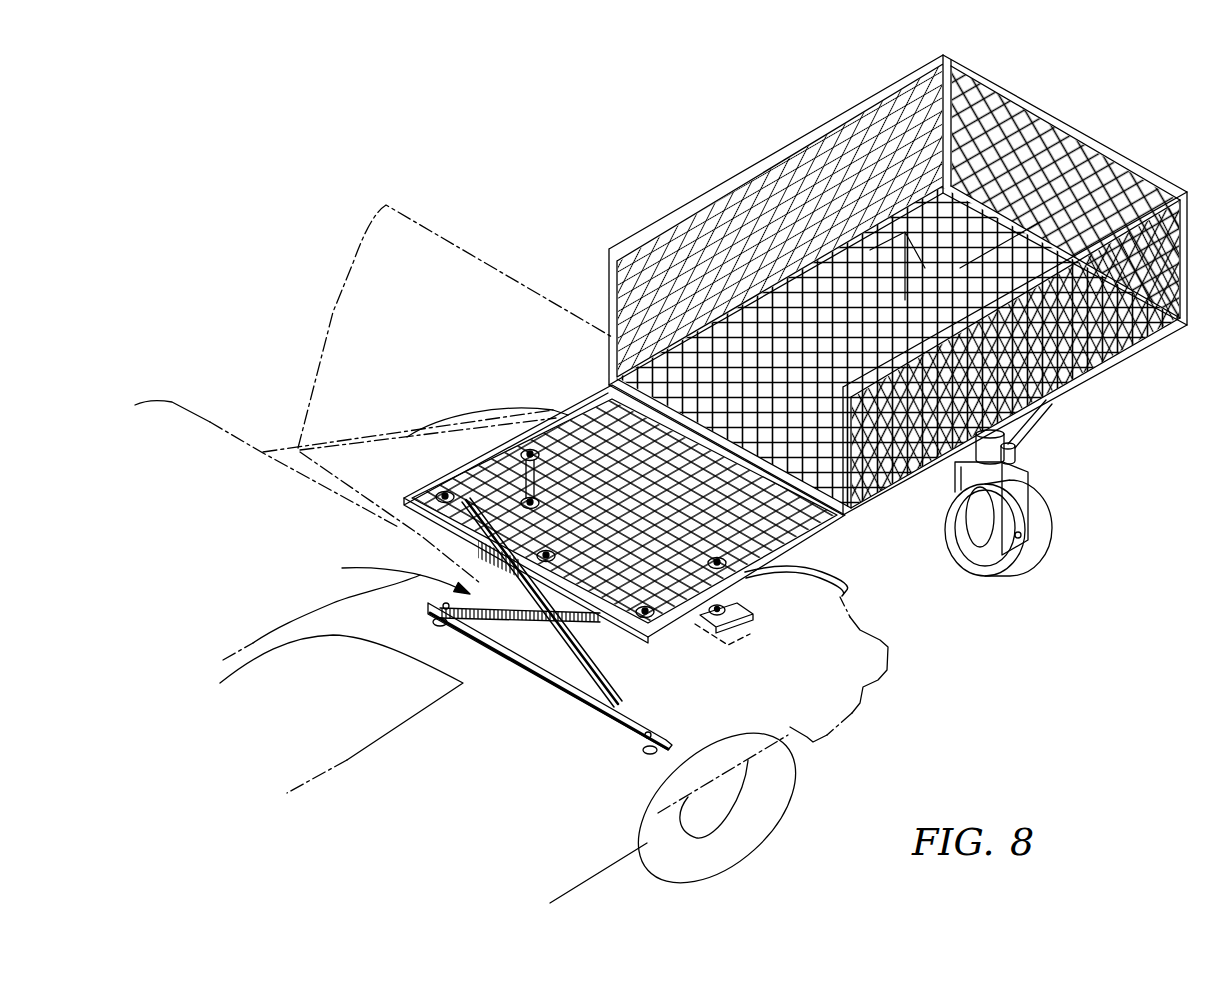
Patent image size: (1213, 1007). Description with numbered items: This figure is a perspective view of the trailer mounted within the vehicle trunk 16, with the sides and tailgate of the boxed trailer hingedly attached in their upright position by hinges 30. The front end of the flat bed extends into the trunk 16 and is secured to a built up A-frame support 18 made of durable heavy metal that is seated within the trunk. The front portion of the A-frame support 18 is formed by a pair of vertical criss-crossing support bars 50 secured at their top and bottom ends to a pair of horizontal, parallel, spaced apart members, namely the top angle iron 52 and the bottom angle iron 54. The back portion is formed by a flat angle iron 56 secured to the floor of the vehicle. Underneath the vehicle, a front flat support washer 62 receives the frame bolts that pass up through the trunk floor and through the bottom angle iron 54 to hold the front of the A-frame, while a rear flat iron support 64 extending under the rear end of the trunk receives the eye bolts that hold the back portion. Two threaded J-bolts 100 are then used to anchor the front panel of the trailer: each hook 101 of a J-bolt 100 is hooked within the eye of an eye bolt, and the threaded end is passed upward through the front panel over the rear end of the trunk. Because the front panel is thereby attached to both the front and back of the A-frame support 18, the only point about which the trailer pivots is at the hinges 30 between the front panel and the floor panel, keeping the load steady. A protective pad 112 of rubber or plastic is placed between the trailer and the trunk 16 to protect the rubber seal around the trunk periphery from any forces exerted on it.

The trunk 16 is at (355, 326).
The A-frame support 18 is at (386, 570).
The hinges 30 is at (890, 152).
The vertical criss-crossing support bars 50 is at (598, 681).
The top angle iron 52 is at (400, 532).
The bottom angle iron 54 is at (617, 723).
The flat angle iron 56 is at (746, 620).
The front flat support washer 62 is at (440, 620).
The rear flat iron support 64 is at (746, 652).
The threaded J-bolts 100 is at (500, 447).
The hook 101 is at (505, 478).
The protective pad 112 is at (840, 582).